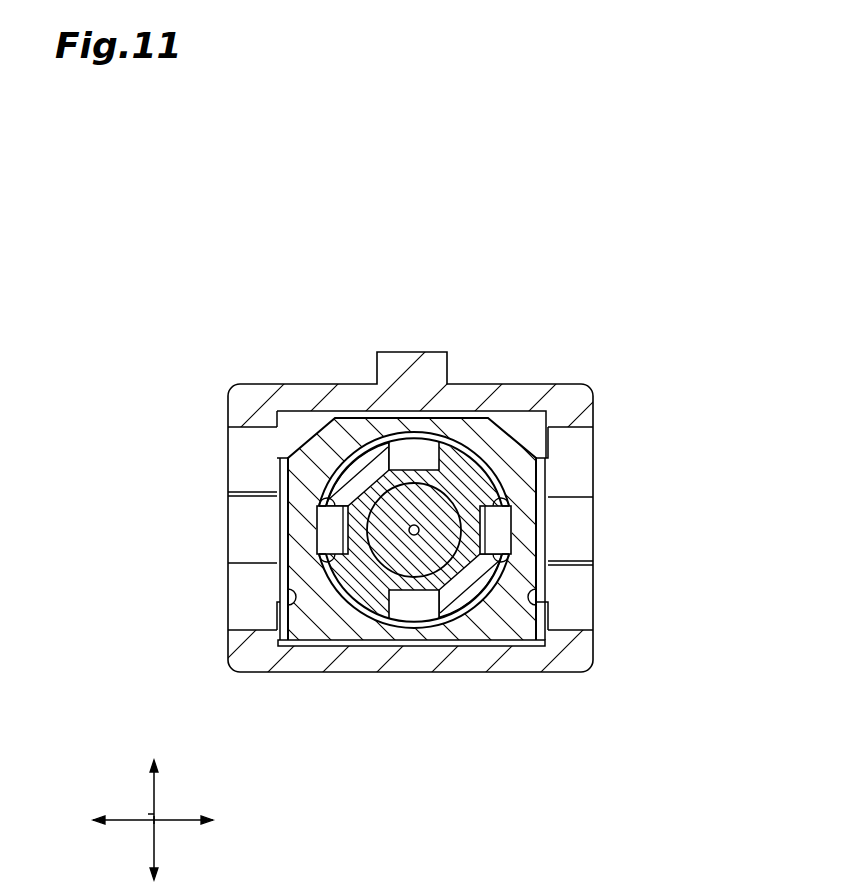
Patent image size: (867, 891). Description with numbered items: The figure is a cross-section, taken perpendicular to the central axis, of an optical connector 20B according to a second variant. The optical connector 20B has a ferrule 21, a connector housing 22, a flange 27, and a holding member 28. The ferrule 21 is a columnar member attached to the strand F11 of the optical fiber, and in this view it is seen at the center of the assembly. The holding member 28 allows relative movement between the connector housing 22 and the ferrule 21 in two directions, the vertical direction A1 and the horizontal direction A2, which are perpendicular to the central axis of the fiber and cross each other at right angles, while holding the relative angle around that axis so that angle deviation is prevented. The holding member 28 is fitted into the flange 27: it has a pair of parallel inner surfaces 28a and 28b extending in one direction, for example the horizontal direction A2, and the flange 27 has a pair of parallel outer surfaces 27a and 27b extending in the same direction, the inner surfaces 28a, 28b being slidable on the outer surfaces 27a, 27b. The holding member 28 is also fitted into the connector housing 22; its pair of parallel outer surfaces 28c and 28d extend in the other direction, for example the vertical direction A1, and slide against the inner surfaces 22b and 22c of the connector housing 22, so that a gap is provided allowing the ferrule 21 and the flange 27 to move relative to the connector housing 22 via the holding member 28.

The optical connector 20B is at (276, 346).
The ferrule 21 is at (433, 558).
The connector housing 22 is at (302, 673).
The inner surface 22b is at (268, 605).
The inner surface 22c is at (548, 607).
The flange 27 is at (362, 475).
The outer surface 27a is at (330, 517).
The outer surface 27b is at (330, 552).
The holding member 28 is at (525, 617).
The inner surface 28a is at (335, 503).
The inner surface 28b is at (322, 557).
The outer surface 28c is at (286, 472).
The outer surface 28d is at (546, 531).
The strand F11 is at (413, 536).
The vertical direction A1 is at (154, 795).
The horizontal direction A2 is at (176, 822).